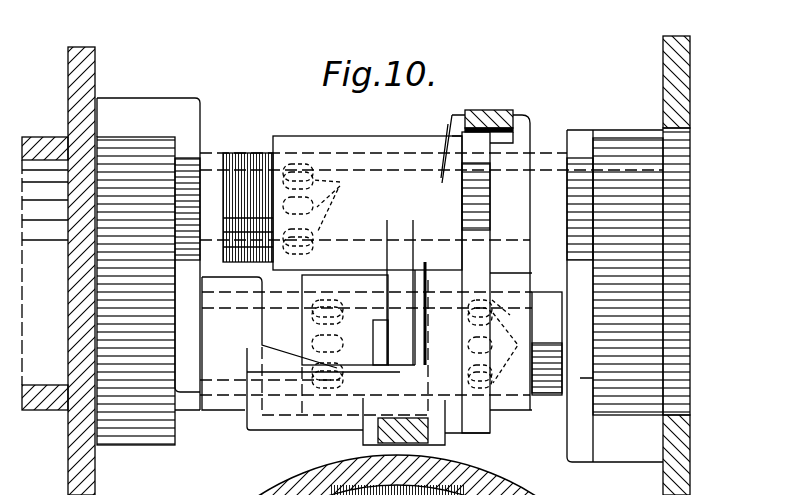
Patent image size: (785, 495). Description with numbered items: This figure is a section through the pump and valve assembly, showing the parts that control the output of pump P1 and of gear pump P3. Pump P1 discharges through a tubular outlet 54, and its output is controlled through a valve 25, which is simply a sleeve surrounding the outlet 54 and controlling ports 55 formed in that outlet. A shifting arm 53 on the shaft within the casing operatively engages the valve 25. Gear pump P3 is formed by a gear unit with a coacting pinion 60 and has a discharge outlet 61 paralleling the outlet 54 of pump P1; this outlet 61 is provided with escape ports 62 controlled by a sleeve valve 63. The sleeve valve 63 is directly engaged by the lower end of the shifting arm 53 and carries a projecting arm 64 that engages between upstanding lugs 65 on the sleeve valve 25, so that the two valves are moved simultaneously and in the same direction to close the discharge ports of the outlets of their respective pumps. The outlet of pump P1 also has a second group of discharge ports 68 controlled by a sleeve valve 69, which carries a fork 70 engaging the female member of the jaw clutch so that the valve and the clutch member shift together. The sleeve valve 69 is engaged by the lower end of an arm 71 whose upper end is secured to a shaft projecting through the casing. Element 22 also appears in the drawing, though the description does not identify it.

The gear 22 is at (125, 279).
The valve 25 is at (308, 310).
The shifting arm 53 is at (498, 110).
The tubular outlet 54 is at (540, 395).
The ports 55 is at (318, 345).
The pinion 60 is at (645, 330).
The discharge outlet 61 is at (540, 168).
The escape ports 62 is at (322, 209).
The sleeve valve 63 is at (342, 142).
The projecting arm 64 is at (402, 283).
The upstanding lugs 65 is at (378, 343).
The discharge ports 68 is at (500, 330).
The sleeve valve 69 is at (282, 430).
The fork 70 is at (480, 222).
The arm 71 is at (397, 432).
The pump P1 is at (188, 158).
The gear pump P3 is at (613, 177).